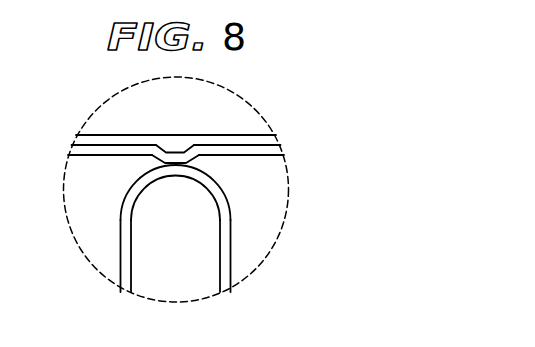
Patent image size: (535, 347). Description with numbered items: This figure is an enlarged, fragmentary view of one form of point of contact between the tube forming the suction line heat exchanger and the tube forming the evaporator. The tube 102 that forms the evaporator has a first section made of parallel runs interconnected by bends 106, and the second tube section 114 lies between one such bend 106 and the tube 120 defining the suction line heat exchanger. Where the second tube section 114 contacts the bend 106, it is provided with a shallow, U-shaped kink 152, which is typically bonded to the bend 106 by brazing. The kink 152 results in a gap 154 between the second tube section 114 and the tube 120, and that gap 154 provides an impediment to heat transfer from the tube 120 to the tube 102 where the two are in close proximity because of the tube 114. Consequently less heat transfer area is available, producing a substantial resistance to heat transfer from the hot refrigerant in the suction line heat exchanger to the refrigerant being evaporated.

The tube 102 is at (223, 228).
The bend 106 is at (203, 168).
The second tube section 114 is at (211, 133).
The tube defining the suction line heat exchanger 120 is at (227, 135).
The kink 152 is at (157, 156).
The gap 154 is at (176, 150).